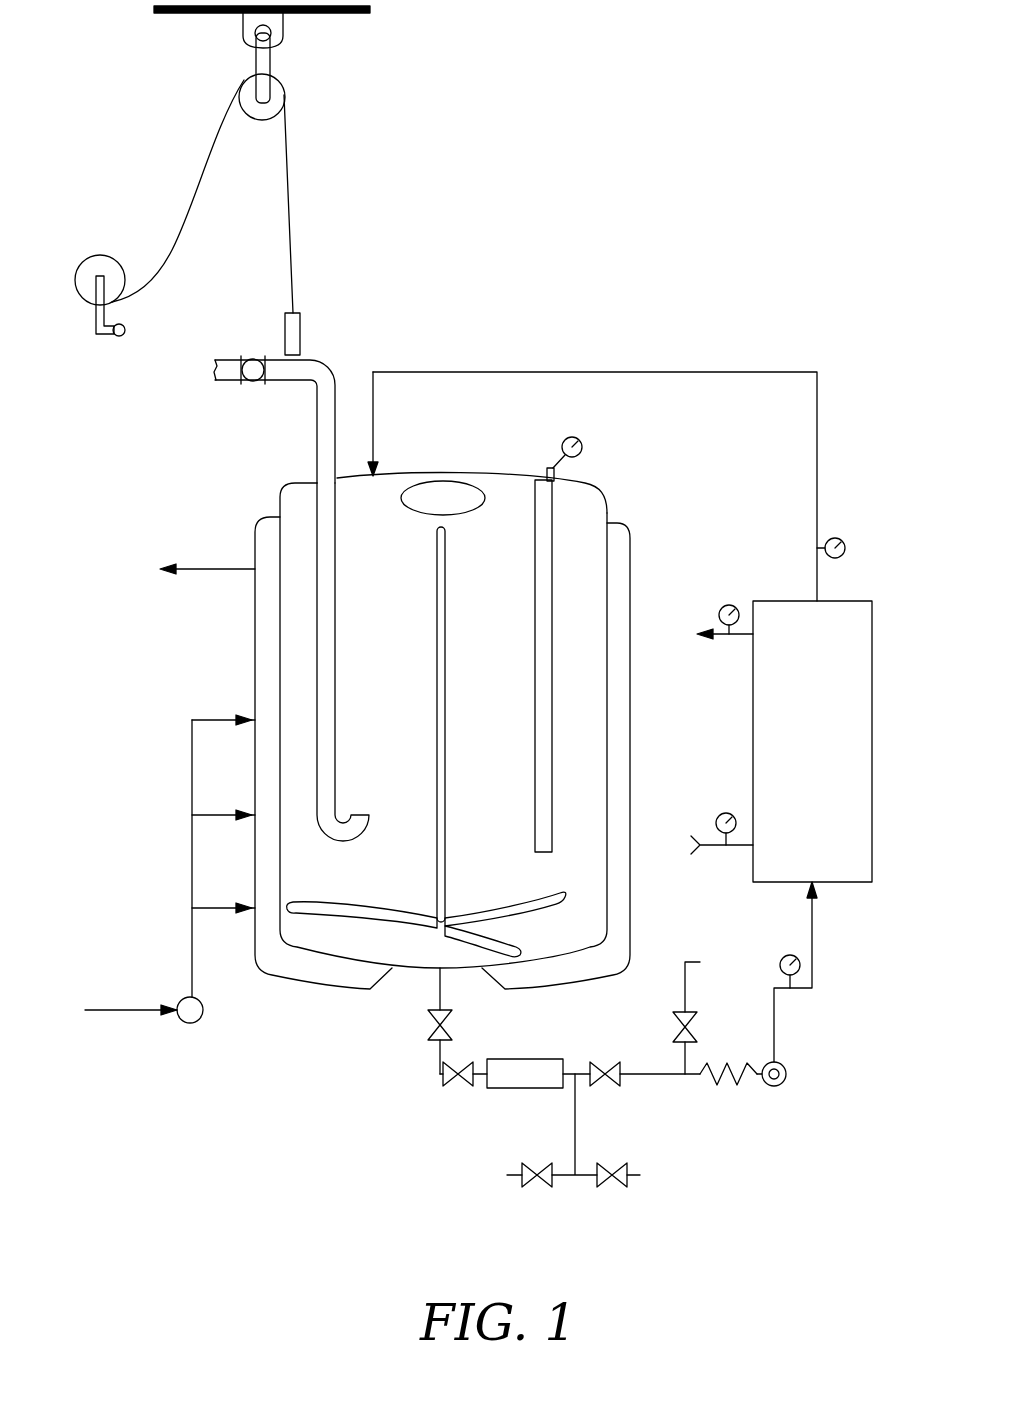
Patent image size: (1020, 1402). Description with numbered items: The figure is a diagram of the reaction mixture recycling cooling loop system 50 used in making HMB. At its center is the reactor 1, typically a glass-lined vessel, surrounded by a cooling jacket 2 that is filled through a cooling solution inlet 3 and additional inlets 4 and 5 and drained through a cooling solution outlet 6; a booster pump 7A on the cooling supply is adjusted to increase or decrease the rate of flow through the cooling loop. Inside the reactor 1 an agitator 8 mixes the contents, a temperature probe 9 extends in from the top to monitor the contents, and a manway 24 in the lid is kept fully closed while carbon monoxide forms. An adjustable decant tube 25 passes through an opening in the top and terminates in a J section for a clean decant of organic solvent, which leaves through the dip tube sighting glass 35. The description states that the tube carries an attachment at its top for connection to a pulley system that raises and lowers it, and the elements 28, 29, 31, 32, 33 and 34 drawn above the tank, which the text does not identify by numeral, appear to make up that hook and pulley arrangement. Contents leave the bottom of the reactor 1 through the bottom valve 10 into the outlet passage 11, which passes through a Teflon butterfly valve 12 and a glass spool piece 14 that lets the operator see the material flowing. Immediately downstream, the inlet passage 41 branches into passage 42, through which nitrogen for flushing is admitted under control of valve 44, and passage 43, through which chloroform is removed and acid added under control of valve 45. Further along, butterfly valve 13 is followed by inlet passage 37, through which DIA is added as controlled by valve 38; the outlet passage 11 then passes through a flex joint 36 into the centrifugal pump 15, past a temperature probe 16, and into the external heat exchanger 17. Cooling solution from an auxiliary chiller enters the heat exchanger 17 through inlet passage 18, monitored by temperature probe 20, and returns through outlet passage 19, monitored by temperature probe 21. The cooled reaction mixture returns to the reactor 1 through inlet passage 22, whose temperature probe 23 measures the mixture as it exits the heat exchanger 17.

The reactor 1 is at (490, 476).
The cooling jacket 2 is at (633, 523).
The cooling solution inlet 3 is at (215, 720).
The additional inlet 4 is at (210, 815).
The additional inlet 5 is at (208, 908).
The cooling solution outlet 6 is at (205, 569).
The booster pump 7A is at (198, 1020).
The agitator 8 is at (446, 760).
The temperature probe 9 is at (583, 447).
The bottom valve 10 is at (428, 1025).
The outlet passage 11 is at (440, 1060).
The Teflon butterfly valve 12 is at (458, 1060).
The butterfly valve 13 is at (610, 1060).
The glass spool piece 14 is at (518, 1059).
The centrifugal pump 15 is at (787, 1074).
The temperature probe 16 is at (785, 955).
The external heat exchanger 17 is at (872, 778).
The inlet passage 18 is at (712, 850).
The outlet passage 19 is at (720, 640).
The temperature probe 20 is at (723, 812).
The temperature probe 21 is at (731, 604).
The inlet passage 22 is at (692, 372).
The temperature probe 23 is at (846, 548).
The manway 24 is at (470, 505).
The decant tube 25 is at (335, 673).
The feed pipe 28 is at (317, 478).
The weight 29 is at (300, 332).
The cable 31 is at (293, 205).
The pulley 32 is at (258, 121).
The support bracket 33 is at (281, 38).
The winch 34 is at (98, 255).
The dip tube sighting glass 35 is at (255, 383).
The flex joint 36 is at (735, 1088).
The inlet passage 37 is at (688, 988).
The valve 38 is at (698, 1022).
The inlet passage 41 is at (577, 1130).
The passage 42 is at (520, 1178).
The passage 43 is at (635, 1178).
The valve 44 is at (527, 1185).
The valve 45 is at (610, 1185).
The reaction mixture recycling cooling loop system 50 is at (562, 292).